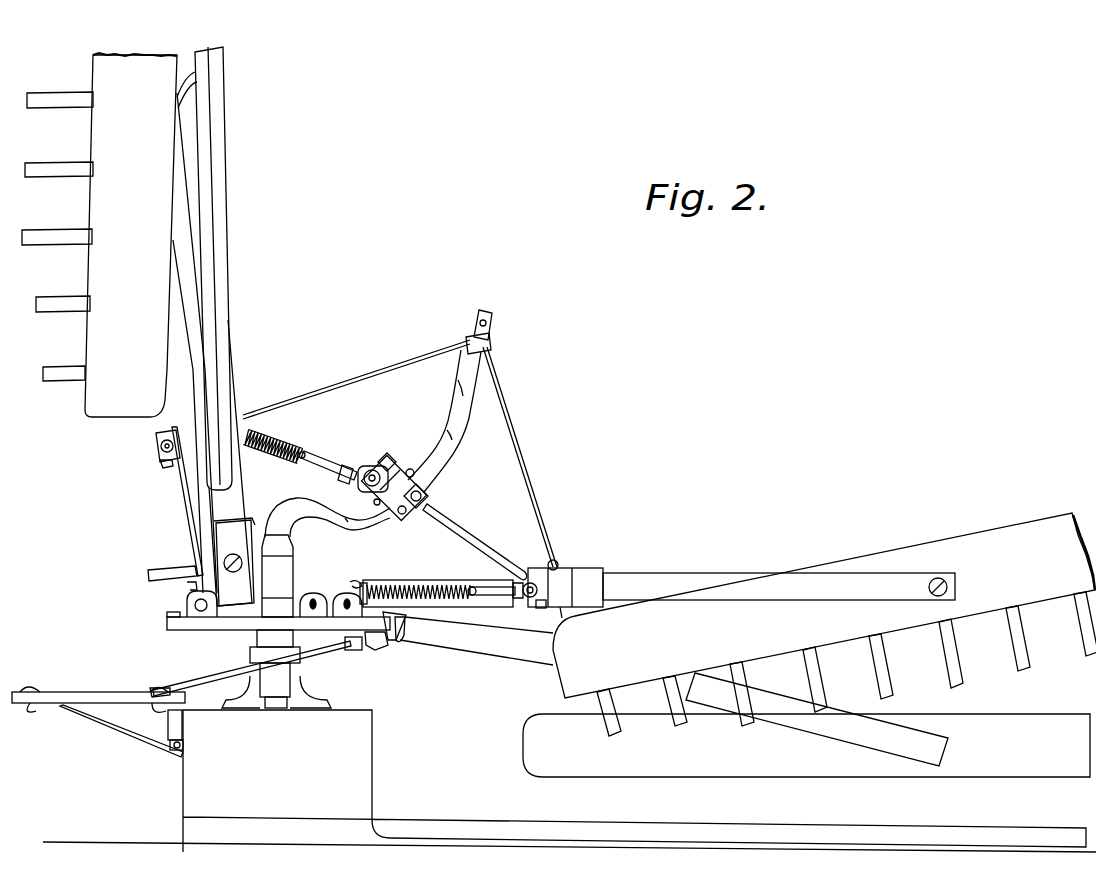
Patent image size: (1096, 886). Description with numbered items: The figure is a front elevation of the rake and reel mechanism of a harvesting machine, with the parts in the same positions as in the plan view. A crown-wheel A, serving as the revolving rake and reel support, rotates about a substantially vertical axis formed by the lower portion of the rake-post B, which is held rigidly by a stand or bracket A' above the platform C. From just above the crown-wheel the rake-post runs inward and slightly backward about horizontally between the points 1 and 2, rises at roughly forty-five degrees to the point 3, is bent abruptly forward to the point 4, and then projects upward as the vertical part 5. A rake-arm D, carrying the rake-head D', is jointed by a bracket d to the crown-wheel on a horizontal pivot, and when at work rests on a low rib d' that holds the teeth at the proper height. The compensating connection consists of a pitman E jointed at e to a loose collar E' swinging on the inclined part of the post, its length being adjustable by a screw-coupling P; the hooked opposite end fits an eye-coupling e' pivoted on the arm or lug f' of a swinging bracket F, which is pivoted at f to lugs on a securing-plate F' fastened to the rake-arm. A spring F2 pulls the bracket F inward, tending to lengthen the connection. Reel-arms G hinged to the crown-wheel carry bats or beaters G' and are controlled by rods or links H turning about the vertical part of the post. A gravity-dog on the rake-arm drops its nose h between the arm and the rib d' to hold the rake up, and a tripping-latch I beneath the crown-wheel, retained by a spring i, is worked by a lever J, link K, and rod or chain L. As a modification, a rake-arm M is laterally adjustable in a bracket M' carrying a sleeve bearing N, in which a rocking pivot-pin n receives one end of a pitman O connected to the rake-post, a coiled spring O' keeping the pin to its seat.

The crown-wheel A is at (210, 632).
The stand or bracket A' is at (276, 710).
The rake-post B is at (332, 512).
The platform C is at (569, 781).
The rake-arm D is at (779, 586).
The rake-head D' is at (824, 624).
The rod or pitman E is at (475, 542).
The loose collar or turning hanger-bracket E' is at (442, 421).
The swinging bracket F is at (572, 610).
The metallic securing-plate F' is at (565, 587).
The spring F2 is at (400, 580).
The reel-arms G is at (578, 543).
The bats or beaters G' is at (642, 412).
The controlling rods or links H is at (392, 366).
The bracket H' is at (297, 589).
The tripping-latch I is at (378, 648).
The lever J is at (98, 689).
The link K is at (250, 669).
The rod or chain L is at (108, 724).
The rake-arm M is at (195, 383).
The bracket M' is at (171, 501).
The sleeve bearing or socket N is at (156, 443).
The pitman O is at (329, 457).
The coiled spring O' is at (274, 437).
The nut-hanger or screw-coupling P is at (372, 468).
The bracket d is at (450, 580).
The ledge or low rib d' is at (408, 640).
The joint e is at (424, 490).
The eye-coupling or socket-piece e' is at (525, 592).
The pivot f is at (560, 566).
The arm or lug f' is at (542, 616).
The nose or point h is at (188, 586).
The spring i is at (344, 643).
The turning eye-rod or rocking pivot-pin n is at (165, 466).
The point 1 is at (277, 563).
The point 2 is at (354, 516).
The point 3 is at (446, 434).
The point 4 is at (458, 381).
The vertical part of rake-post 5 is at (488, 332).